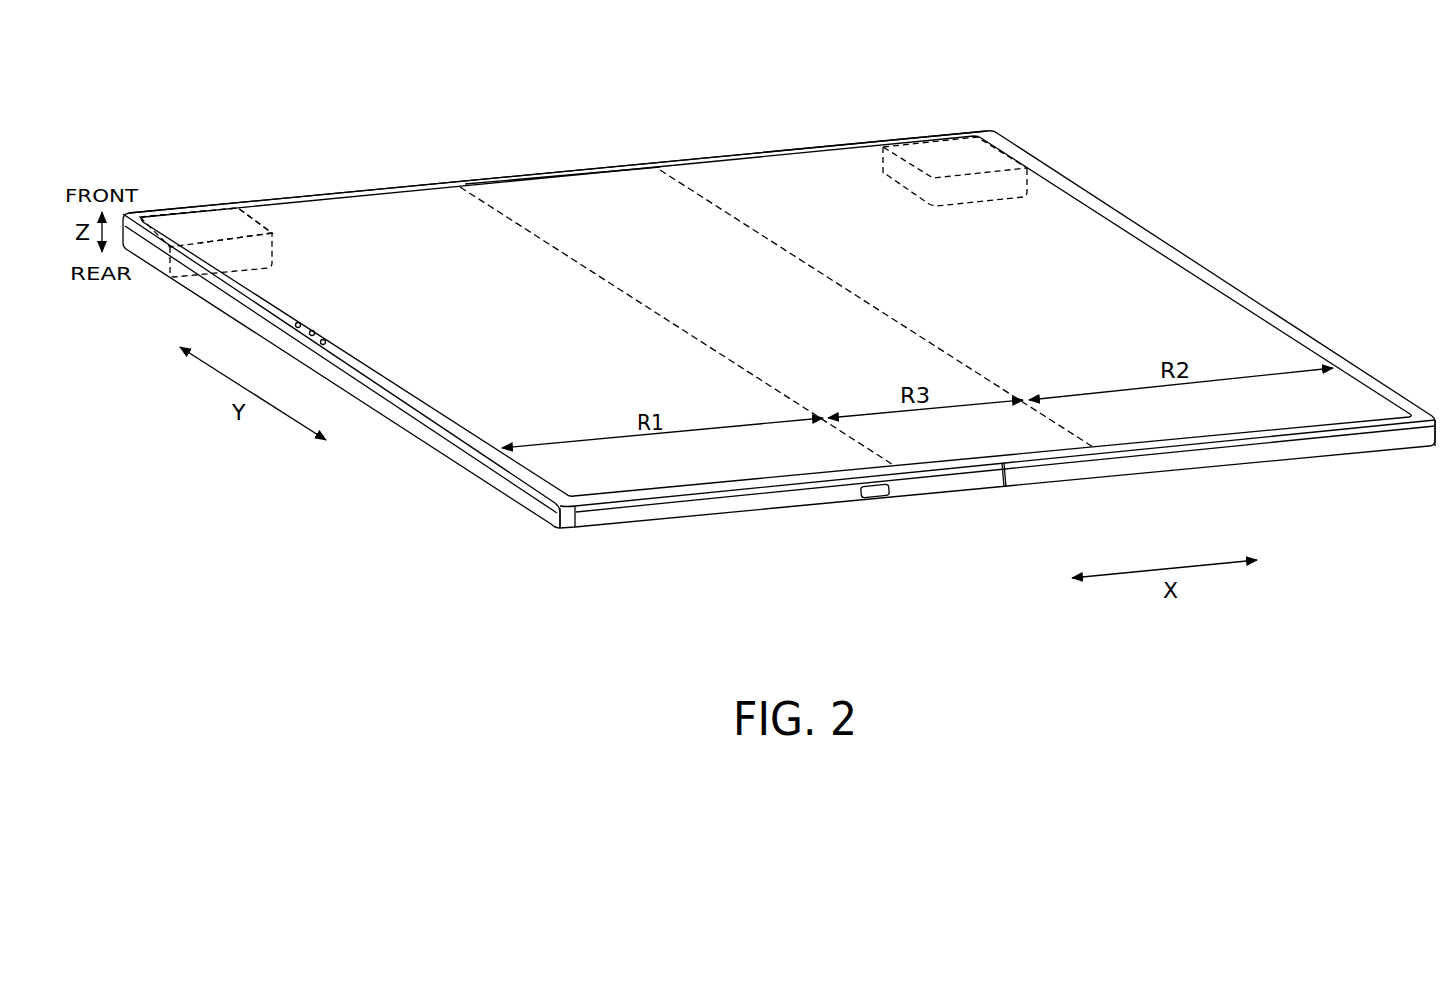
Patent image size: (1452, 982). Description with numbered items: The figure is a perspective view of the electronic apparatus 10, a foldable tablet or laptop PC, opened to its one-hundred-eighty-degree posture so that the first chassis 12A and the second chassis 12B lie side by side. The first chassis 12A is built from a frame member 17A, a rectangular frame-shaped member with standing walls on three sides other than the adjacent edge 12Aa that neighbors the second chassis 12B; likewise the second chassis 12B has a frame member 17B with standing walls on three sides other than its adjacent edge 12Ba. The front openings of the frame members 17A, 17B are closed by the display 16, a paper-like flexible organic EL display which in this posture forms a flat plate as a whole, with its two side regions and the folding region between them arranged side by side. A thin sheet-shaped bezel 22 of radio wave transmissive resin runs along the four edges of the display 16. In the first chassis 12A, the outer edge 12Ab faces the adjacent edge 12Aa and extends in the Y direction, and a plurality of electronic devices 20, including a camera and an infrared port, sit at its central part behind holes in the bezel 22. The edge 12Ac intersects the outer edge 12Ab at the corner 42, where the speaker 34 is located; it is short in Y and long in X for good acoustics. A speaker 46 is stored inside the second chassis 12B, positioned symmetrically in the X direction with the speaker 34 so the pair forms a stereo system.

The electronic apparatus 10 is at (155, 87).
The first chassis 12A is at (713, 530).
The second chassis 12B is at (1333, 464).
The adjacent edge 12Aa is at (1008, 470).
The adjacent edge 12Ba is at (1002, 470).
The outer edge 12Ab is at (483, 463).
The edge 12Ac is at (345, 186).
The display 16 is at (1055, 233).
The frame member 17A is at (610, 518).
The frame member 17B is at (1393, 444).
The electronic devices 20 is at (323, 339).
The bezel 22 is at (398, 185).
The speaker 34 is at (215, 220).
The corner 42 is at (177, 218).
The speaker 46 is at (947, 147).